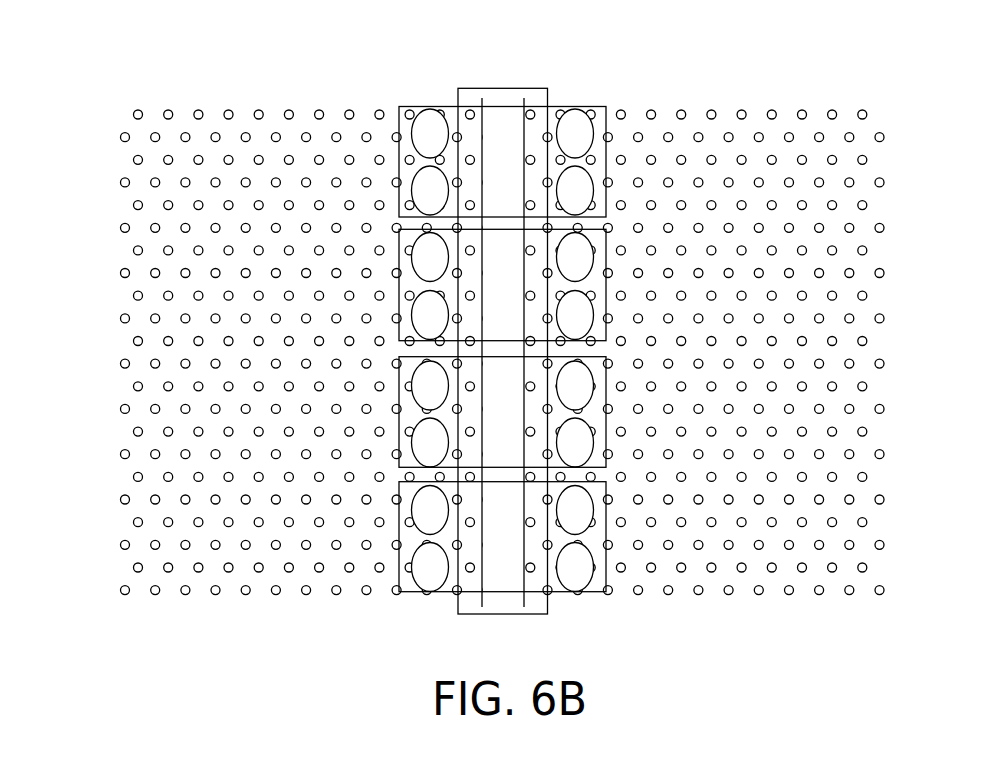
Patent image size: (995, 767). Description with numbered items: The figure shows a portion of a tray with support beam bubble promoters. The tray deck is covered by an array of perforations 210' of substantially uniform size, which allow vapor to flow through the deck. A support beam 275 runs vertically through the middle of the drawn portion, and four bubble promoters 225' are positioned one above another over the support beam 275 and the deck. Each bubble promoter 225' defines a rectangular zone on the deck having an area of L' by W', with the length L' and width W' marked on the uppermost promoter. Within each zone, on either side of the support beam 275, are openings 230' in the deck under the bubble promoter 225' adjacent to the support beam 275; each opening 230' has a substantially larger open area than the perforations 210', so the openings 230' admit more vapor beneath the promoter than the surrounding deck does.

The perforations 210' is at (464, 352).
The bubble promoter 225' is at (483, 328).
The openings 230' is at (687, 350).
The support beam 275 is at (537, 614).
The length of bubble promoter zone L' is at (584, 67).
The width of bubble promoter zone W' is at (656, 90).